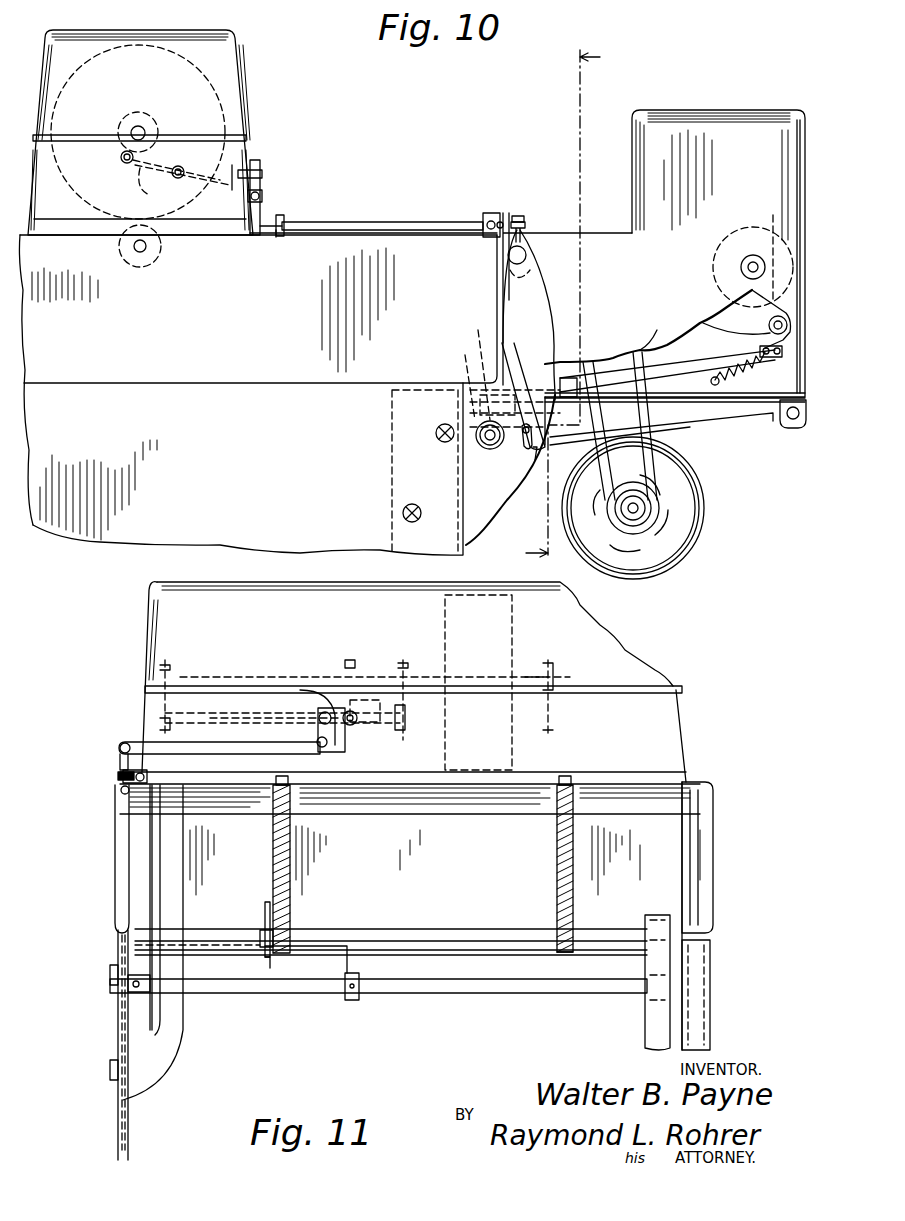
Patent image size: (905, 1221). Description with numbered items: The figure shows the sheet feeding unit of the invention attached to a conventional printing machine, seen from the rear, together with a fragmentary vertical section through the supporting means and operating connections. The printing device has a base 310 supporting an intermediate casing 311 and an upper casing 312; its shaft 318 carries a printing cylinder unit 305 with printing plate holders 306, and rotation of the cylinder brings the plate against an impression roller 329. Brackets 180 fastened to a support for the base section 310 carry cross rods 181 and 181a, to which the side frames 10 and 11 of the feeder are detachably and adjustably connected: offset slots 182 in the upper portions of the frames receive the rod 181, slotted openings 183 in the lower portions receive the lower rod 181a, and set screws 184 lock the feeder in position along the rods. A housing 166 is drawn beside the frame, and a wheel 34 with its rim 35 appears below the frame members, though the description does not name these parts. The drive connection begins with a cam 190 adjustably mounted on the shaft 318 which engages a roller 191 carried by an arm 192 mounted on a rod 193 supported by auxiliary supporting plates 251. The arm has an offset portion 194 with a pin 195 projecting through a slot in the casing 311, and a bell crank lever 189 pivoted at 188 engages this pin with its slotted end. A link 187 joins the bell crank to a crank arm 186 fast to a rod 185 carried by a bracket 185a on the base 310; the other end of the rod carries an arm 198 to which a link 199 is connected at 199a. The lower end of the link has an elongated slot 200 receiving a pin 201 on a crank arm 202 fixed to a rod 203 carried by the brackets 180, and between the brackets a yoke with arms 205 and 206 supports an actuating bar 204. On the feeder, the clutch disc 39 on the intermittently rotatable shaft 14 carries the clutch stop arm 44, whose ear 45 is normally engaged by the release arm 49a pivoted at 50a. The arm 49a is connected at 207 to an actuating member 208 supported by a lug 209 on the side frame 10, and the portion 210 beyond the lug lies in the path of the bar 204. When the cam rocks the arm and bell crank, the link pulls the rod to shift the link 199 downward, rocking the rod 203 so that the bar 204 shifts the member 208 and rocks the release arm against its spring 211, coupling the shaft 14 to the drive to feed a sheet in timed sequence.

In FIG. 10, the side frame 10 is at (675, 277).
In FIG. 11, the side frame 10 is at (290, 910).
In FIG. 10, the side frame 11 is at (563, 308).
In FIG. 11, the side frame 11 is at (558, 866).
In FIG. 10, the intermittently rotatable shaft 14 is at (740, 265).
In FIG. 10, the wheel hub 34 is at (690, 462).
In FIG. 10, the wheel 35 is at (700, 525).
In FIG. 10, the clutch disc 39 is at (730, 235).
In FIG. 10, the clutch stop arm 44 is at (770, 250).
In FIG. 10, the ear 45 is at (768, 325).
In FIG. 10, the clutch release arm 49a is at (712, 300).
In FIG. 10, the pivot 50a is at (735, 334).
In FIG. 10, the housing 166 is at (373, 244).
In FIG. 10, the brackets 180 is at (510, 470).
In FIG. 11, the brackets 180 is at (186, 1030).
In FIG. 10, the cross rod 181 is at (520, 238).
In FIG. 11, the cross rod 181 is at (525, 838).
In FIG. 10, the cross rod 181a is at (548, 385).
In FIG. 11, the cross rod 181a is at (490, 920).
In FIG. 10, the offset slots 182 is at (528, 258).
In FIG. 10, the slotted opening 183 is at (540, 357).
In FIG. 10, the set screws 184 is at (524, 220).
In FIG. 11, the set screws 184 is at (290, 768).
In FIG. 10, the rod 185 is at (370, 208).
In FIG. 11, the rod 185 is at (118, 776).
In FIG. 10, the bracket 185a is at (338, 245).
In FIG. 10, the crank arm 186 is at (262, 214).
In FIG. 11, the crank arm 186 is at (122, 752).
In FIG. 11, the link 187 is at (248, 740).
In FIG. 11, the pivot 188 is at (325, 705).
In FIG. 11, the bell crank lever 189 is at (302, 690).
In FIG. 10, the cam 190 is at (125, 115).
In FIG. 11, the cam 190 is at (350, 660).
In FIG. 10, the roller 191 is at (122, 163).
In FIG. 10, the arm 192 is at (155, 186).
In FIG. 11, the arm 192 is at (370, 680).
In FIG. 10, the rod 193 is at (190, 158).
In FIG. 11, the rod 193 is at (240, 720).
In FIG. 10, the offset portion 194 is at (250, 168).
In FIG. 11, the offset portion 194 is at (372, 728).
In FIG. 10, the pin 195 is at (264, 176).
In FIG. 11, the pin 195 is at (352, 727).
In FIG. 10, the arm 198 is at (507, 222).
In FIG. 11, the arm 198 is at (125, 772).
In FIG. 10, the link 199 is at (515, 300).
In FIG. 11, the link 199 is at (114, 898).
In FIG. 10, the connection 199a is at (520, 215).
In FIG. 11, the connection 199a is at (121, 792).
In FIG. 10, the elongated slot 200 is at (533, 470).
In FIG. 10, the pin 201 is at (520, 443).
In FIG. 11, the pin 201 is at (128, 985).
In FIG. 10, the crank arm 202 is at (502, 442).
In FIG. 11, the crank arm 202 is at (126, 1012).
In FIG. 10, the rod 203 is at (480, 440).
In FIG. 11, the rod 203 is at (490, 985).
In FIG. 10, the actuating bar 204 is at (513, 378).
In FIG. 11, the actuating bar 204 is at (325, 960).
In FIG. 10, the yoke arm 205 is at (485, 410).
In FIG. 11, the yoke arm 205 is at (260, 962).
In FIG. 11, the yoke arm 206 is at (362, 970).
In FIG. 10, the connection 207 is at (791, 425).
In FIG. 10, the actuating member 208 is at (643, 328).
In FIG. 11, the actuating member 208 is at (262, 902).
In FIG. 10, the lug 209 is at (612, 348).
In FIG. 11, the lug 209 is at (258, 932).
In FIG. 10, the portion of actuating member 210 is at (471, 367).
In FIG. 11, the portion of actuating member 210 is at (288, 970).
In FIG. 10, the spring 211 is at (712, 360).
In FIG. 11, the auxiliary supporting plates 251 is at (160, 668).
In FIG. 10, the printing cylinder unit 305 is at (137, 45).
In FIG. 11, the printing cylinder unit 305 is at (515, 608).
In FIG. 10, the printing plate holder 306 is at (190, 60).
In FIG. 10, the base 310 is at (258, 395).
In FIG. 11, the base 310 is at (714, 885).
In FIG. 10, the intermediate casing 311 is at (140, 207).
In FIG. 11, the intermediate casing 311 is at (416, 702).
In FIG. 10, the upper casing 312 is at (236, 52).
In FIG. 11, the upper casing 312 is at (620, 622).
In FIG. 10, the shaft 318 is at (145, 128).
In FIG. 11, the shaft 318 is at (530, 672).
In FIG. 10, the impression roller 329 is at (140, 268).